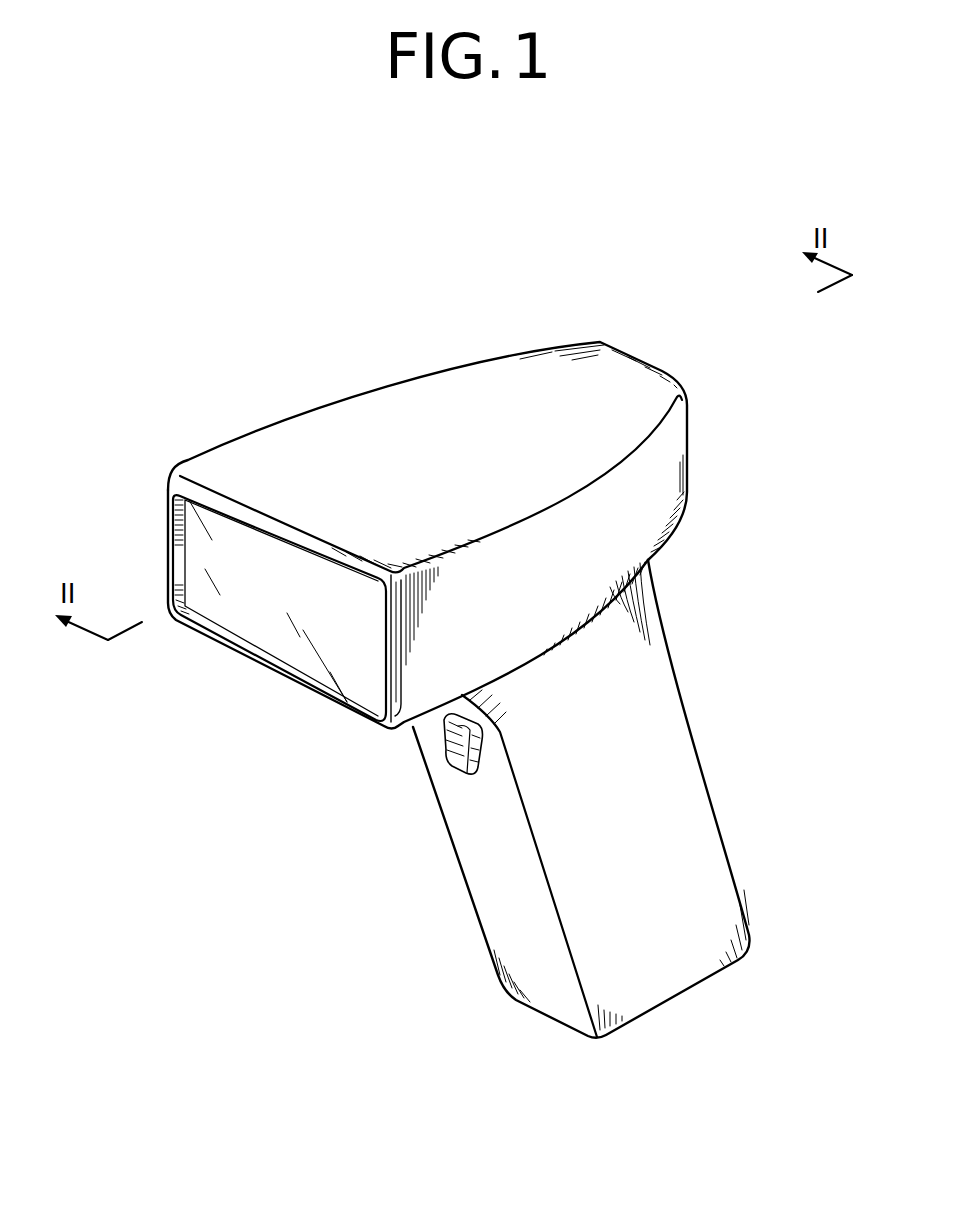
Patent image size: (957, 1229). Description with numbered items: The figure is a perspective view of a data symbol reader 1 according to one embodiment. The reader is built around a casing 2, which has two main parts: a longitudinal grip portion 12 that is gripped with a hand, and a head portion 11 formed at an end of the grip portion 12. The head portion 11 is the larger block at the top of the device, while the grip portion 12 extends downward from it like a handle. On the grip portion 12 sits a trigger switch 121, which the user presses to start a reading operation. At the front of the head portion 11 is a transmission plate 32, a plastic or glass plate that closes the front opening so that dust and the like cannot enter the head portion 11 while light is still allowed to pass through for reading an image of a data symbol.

The data symbol reader 1 is at (481, 340).
The casing 2 is at (337, 422).
The head portion 11 is at (792, 353).
The grip portion 12 is at (792, 560).
The transmission plate 32 is at (252, 633).
The trigger switch 121 is at (455, 750).